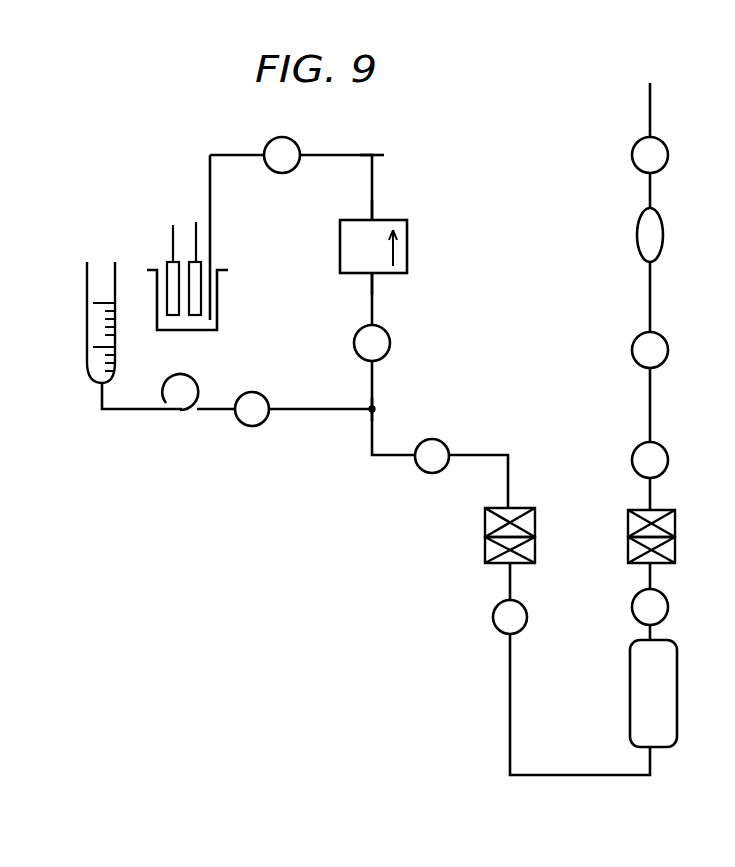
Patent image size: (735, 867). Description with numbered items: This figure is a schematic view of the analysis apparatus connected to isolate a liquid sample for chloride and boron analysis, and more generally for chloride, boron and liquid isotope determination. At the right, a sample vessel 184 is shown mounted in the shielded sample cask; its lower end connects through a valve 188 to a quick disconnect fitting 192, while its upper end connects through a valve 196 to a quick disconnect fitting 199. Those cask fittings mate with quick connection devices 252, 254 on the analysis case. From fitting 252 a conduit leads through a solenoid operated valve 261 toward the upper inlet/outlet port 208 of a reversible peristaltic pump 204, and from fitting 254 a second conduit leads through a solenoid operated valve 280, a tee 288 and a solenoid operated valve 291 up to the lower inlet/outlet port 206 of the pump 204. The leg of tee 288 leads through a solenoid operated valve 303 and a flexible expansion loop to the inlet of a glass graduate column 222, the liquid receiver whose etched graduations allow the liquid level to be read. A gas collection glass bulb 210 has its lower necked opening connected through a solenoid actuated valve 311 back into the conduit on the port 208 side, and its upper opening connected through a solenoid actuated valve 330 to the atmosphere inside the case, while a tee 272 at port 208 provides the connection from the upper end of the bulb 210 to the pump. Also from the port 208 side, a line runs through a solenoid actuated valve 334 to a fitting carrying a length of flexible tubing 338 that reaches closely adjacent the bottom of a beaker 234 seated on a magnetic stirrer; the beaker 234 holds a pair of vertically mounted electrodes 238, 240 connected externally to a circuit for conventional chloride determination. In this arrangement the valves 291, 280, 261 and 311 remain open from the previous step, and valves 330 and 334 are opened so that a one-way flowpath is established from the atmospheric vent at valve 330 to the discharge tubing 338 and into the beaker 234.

The sample vessel 184 is at (678, 703).
The valve 188 is at (493, 617).
The quick disconnect fitting 192 is at (483, 549).
The valve 196 is at (670, 607).
The quick disconnect fitting 199 is at (675, 548).
The peristaltic pump 204 is at (408, 250).
The inlet/outlet port 206 is at (375, 275).
The inlet/outlet port 208 is at (372, 218).
The glass bulb 210 is at (663, 232).
The graduate column 222 is at (86, 362).
The beaker 234 is at (217, 299).
The electrode 238 is at (167, 265).
The electrode 240 is at (190, 262).
The quick connection device 252 is at (675, 515).
The quick connection device 254 is at (483, 524).
The solenoid operated valve 261 is at (668, 455).
The tee 272 is at (372, 155).
The solenoid operated valve 280 is at (425, 471).
The tee 288 is at (376, 405).
The solenoid operated valve 291 is at (391, 348).
The solenoid operated valve 303 is at (245, 426).
The solenoid actuated valve 311 is at (667, 345).
The solenoid actuated valve 330 is at (667, 150).
The solenoid actuated valve 334 is at (295, 143).
The flexible tubing 338 is at (210, 168).